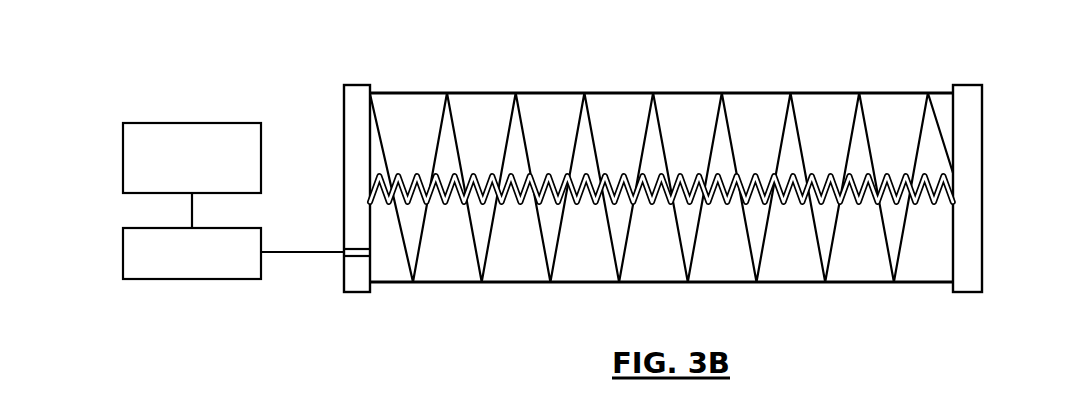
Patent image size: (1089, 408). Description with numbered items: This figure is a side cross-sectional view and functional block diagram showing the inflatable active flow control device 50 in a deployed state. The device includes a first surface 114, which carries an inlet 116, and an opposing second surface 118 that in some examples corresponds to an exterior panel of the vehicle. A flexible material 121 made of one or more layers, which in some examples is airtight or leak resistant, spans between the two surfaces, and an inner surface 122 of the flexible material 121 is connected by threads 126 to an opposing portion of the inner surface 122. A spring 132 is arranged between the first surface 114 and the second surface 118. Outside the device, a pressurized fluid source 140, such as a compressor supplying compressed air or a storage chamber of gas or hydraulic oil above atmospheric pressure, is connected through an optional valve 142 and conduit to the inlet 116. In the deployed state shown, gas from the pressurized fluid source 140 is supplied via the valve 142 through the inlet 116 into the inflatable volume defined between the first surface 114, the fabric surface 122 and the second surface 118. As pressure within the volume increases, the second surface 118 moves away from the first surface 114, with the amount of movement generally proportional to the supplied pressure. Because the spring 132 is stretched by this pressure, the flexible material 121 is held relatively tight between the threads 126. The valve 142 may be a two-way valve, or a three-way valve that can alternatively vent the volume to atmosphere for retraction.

The inflatable active flow control device 50 is at (316, 48).
The first surface 114 is at (344, 143).
The inlet 116 is at (355, 253).
The second surface 118 is at (984, 121).
The flexible material 121 is at (617, 93).
The inner surface 122 is at (479, 100).
The threads 126 is at (522, 126).
The spring 132 is at (757, 173).
The pressurized fluid source 140 is at (123, 143).
The valve 142 is at (123, 250).